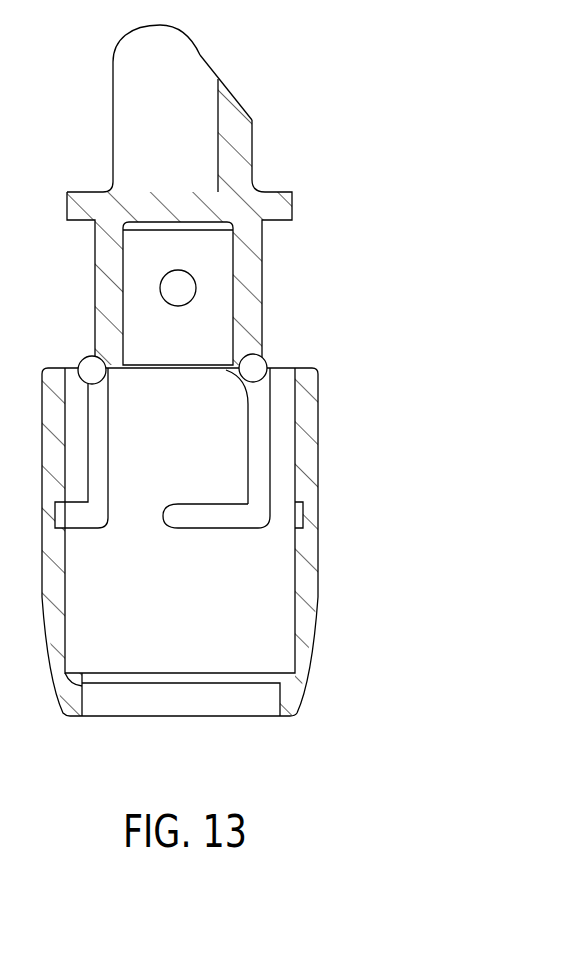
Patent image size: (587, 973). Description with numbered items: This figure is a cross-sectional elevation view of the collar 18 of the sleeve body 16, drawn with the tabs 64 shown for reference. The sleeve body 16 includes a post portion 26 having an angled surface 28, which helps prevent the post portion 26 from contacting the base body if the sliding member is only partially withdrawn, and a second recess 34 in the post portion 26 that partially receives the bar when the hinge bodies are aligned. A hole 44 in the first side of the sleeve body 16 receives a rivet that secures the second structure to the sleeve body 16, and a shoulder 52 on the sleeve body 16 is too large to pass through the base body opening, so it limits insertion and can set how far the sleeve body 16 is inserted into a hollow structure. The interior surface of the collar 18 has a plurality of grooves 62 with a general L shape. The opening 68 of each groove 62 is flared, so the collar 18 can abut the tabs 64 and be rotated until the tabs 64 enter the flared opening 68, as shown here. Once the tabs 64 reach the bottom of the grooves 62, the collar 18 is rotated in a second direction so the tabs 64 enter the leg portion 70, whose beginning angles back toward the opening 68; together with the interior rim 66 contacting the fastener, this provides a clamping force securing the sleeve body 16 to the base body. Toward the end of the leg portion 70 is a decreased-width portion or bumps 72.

The sleeve body 16 is at (414, 305).
The collar 18 is at (303, 607).
The post portion 26 is at (232, 121).
The angled surface 28 is at (200, 56).
The second recess 34 is at (150, 133).
The hole 44 is at (175, 287).
The shoulder 52 is at (277, 206).
The grooves 62 is at (113, 431).
The tabs 64 is at (87, 357).
The interior rim 66 is at (92, 676).
The opening 68 is at (99, 392).
The leg portion 70 is at (78, 548).
The bumps 72 is at (200, 531).